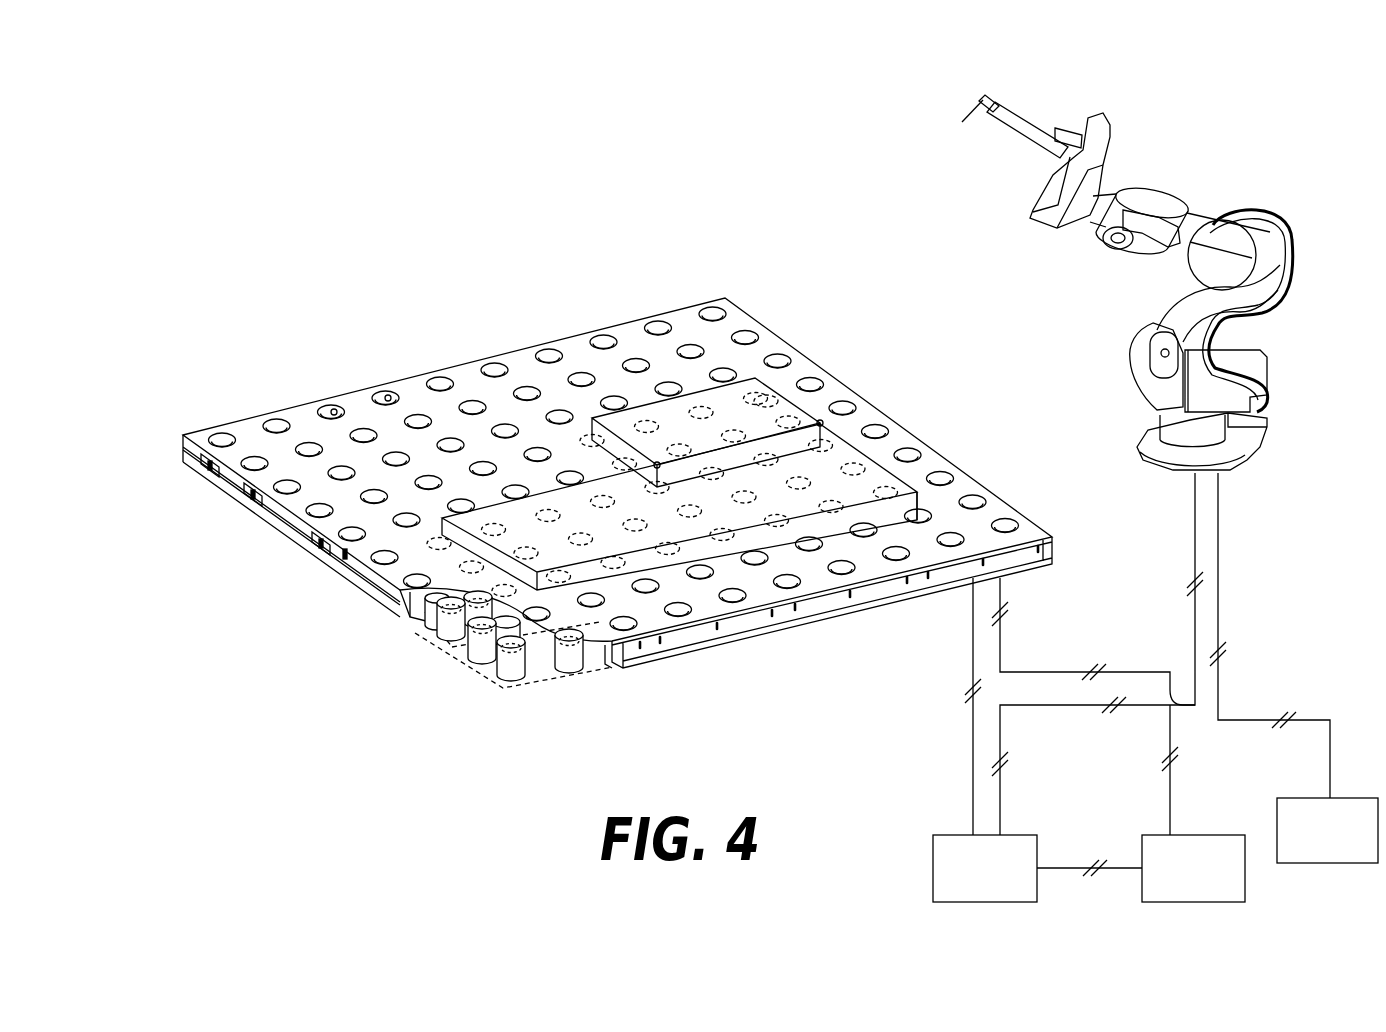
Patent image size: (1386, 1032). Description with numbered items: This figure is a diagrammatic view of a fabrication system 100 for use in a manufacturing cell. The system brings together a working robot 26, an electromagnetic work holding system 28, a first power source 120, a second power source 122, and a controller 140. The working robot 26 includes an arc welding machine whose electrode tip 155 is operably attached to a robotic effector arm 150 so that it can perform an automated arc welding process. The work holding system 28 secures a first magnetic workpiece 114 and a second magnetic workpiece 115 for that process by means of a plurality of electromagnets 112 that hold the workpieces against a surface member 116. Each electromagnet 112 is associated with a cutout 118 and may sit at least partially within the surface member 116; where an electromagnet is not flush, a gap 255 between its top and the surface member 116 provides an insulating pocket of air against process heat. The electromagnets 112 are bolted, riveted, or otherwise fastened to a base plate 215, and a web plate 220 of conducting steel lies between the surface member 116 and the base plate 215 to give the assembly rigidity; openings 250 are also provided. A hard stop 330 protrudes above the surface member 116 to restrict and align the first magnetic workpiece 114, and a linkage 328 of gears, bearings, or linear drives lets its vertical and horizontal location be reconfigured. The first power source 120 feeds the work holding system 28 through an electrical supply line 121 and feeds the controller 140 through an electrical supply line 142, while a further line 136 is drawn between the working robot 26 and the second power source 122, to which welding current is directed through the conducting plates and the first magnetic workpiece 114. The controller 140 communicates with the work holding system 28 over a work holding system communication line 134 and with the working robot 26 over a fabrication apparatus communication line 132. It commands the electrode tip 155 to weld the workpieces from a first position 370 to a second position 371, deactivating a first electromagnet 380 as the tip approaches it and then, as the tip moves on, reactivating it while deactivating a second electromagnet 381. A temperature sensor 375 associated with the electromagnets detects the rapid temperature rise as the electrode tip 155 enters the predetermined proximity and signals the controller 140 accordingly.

The fabrication system 100 is at (720, 218).
The work holding system 28 is at (228, 323).
The working robot 26 is at (1163, 152).
The electrode tip 155 is at (972, 113).
The robotic effector arm 150 is at (1133, 257).
The temperature sensor 375 is at (388, 398).
The second position 371 is at (657, 462).
The second magnetic workpiece 115 is at (778, 398).
The first position 370 is at (840, 435).
The first electromagnet 380 is at (823, 424).
The second electromagnet 381 is at (772, 463).
The first magnetic workpiece 114 is at (922, 514).
The openings 250 is at (251, 490).
The web plate 220 is at (293, 527).
The surface member 116 is at (408, 592).
The cutout 118 is at (447, 622).
The gap 255 is at (492, 656).
The electromagnets 112 is at (571, 662).
The linkage 328 is at (612, 670).
The hard stop 330 is at (745, 630).
The base plate 215 is at (870, 608).
The work holding system communication line 134 is at (972, 732).
The electrical supply line 121 is at (1040, 670).
The fabrication apparatus communication line 132 is at (1037, 707).
The interface cable 136 is at (1330, 760).
The electrical supply line 142 is at (1062, 868).
The controller 140 is at (985, 868).
The first power source 120 is at (1193, 868).
The second power source 122 is at (1327, 830).